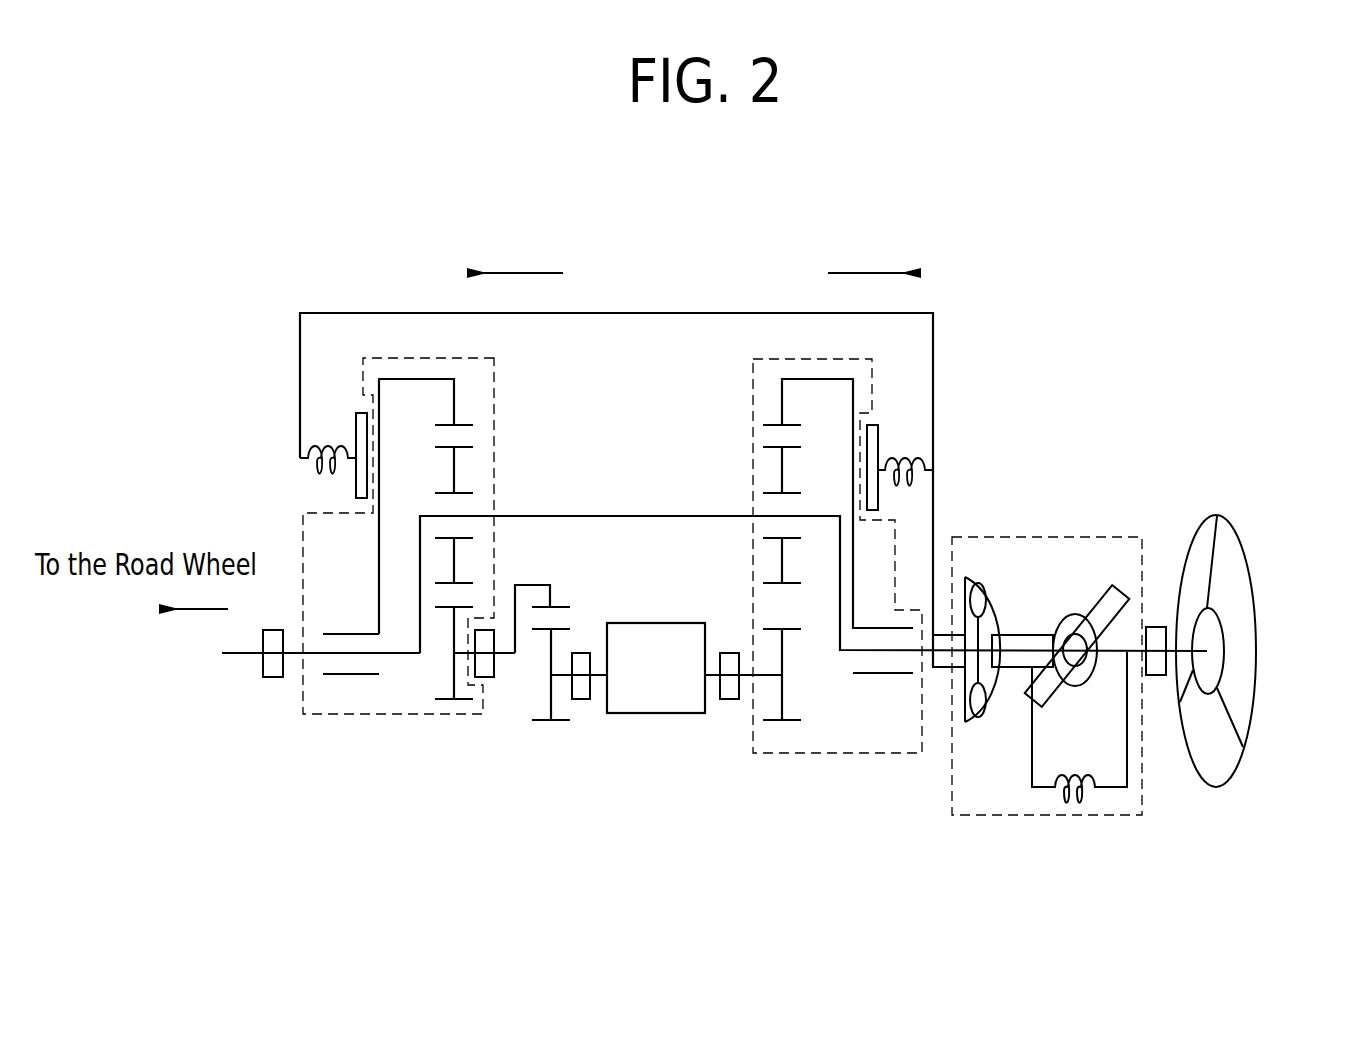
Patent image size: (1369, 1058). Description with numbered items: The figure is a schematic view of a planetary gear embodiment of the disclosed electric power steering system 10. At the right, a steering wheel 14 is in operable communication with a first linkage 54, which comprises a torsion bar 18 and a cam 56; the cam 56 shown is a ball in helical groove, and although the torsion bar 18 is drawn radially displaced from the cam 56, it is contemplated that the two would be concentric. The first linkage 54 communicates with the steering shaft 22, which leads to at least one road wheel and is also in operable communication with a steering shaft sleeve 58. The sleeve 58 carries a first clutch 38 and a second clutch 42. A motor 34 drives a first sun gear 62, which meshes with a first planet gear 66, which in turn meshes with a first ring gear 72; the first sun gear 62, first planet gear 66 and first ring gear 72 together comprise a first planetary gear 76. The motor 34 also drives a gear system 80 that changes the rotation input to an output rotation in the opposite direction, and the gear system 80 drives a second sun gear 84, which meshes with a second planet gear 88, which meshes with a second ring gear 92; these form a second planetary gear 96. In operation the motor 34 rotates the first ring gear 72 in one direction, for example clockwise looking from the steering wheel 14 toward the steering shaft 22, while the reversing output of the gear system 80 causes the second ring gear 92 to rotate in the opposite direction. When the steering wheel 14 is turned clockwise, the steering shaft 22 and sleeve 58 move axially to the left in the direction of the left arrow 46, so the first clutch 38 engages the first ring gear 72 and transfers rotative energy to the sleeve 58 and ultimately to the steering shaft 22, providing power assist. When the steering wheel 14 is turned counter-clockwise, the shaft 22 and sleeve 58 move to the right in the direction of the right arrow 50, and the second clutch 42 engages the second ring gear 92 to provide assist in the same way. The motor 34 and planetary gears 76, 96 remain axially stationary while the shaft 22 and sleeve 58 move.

The steering system 10 is at (1078, 208).
The steering wheel 14 is at (1233, 530).
The torsion bar 18 is at (1115, 789).
The steering shaft 22 is at (587, 516).
The motor 34 is at (668, 688).
The first clutch 38 is at (874, 424).
The second clutch 42 is at (362, 410).
The left arrow 46 is at (515, 253).
The right arrow 50 is at (874, 253).
The first linkage 54 is at (1025, 537).
The cam 56 is at (1070, 617).
The steering shaft sleeve 58 is at (680, 313).
The first sun gear 62 is at (783, 707).
The first planet gear 66 is at (782, 470).
The first ring gear 72 is at (818, 379).
The first planetary gear 76 is at (903, 757).
The gear system 80 is at (531, 585).
The second sun gear 84 is at (453, 673).
The second planet gear 88 is at (455, 560).
The second ring gear 92 is at (455, 402).
The second planetary gear 96 is at (357, 716).